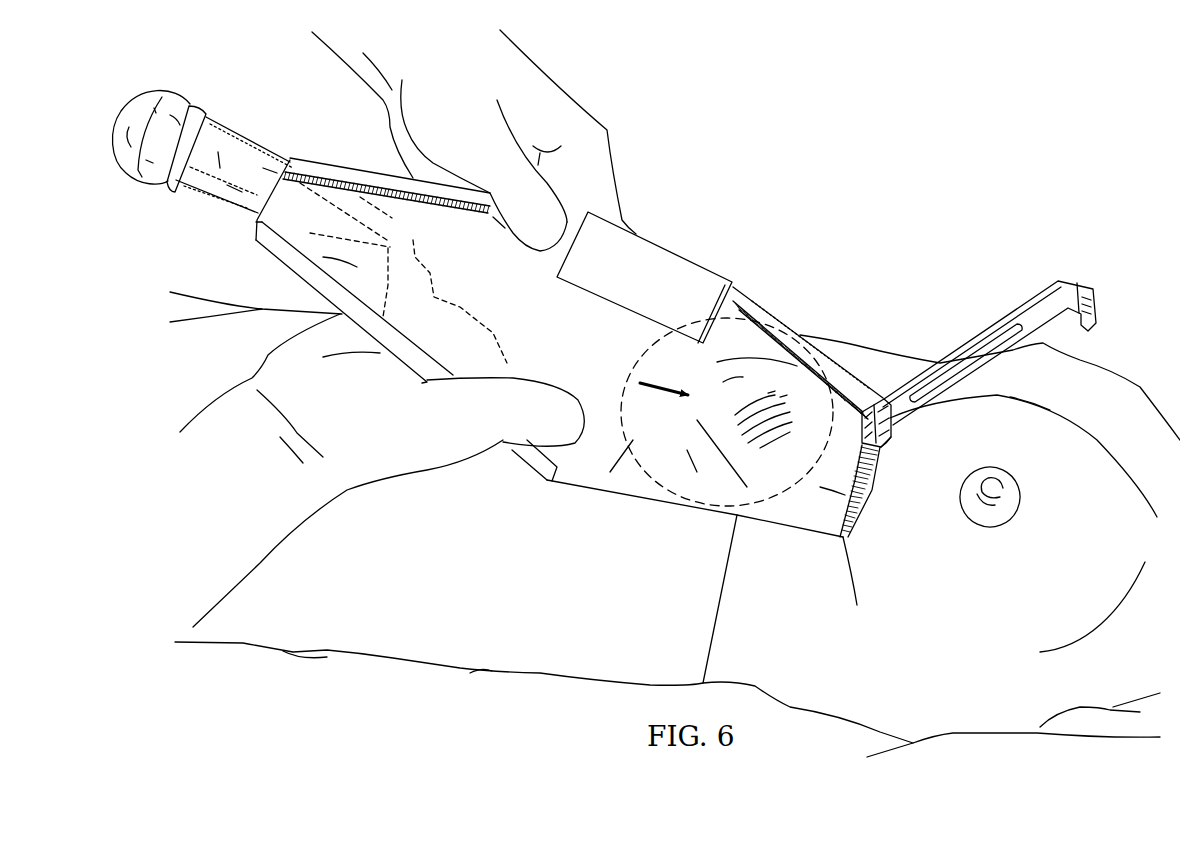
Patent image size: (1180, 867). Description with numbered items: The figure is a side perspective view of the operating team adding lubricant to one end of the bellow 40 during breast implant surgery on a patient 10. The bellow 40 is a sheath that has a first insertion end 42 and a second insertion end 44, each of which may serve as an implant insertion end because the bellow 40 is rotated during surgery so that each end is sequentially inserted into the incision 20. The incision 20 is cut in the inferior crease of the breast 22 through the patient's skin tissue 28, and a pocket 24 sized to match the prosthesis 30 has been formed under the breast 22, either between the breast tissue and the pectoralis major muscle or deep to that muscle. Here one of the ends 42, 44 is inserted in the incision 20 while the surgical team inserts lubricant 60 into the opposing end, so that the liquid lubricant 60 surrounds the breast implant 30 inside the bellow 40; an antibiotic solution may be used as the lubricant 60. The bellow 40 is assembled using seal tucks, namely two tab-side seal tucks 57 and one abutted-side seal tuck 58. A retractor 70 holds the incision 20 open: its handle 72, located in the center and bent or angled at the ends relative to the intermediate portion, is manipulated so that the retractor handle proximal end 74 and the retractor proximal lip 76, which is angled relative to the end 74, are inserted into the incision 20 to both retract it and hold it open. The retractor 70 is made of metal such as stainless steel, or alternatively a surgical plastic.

The patient 10 is at (1124, 362).
The incision 20 is at (876, 491).
The breast 22 is at (1092, 441).
The pocket 24 is at (858, 478).
The skin tissue 28 is at (1052, 418).
The prosthesis 30 is at (687, 315).
The bellow 40 is at (731, 266).
The first insertion end 42 is at (287, 158).
The second insertion end 44 is at (807, 547).
The tab-side seal tuck 57 is at (368, 174).
The abutted-side seal tuck 58 is at (283, 257).
The lubricant 60 is at (410, 240).
The retractor 70 is at (940, 351).
The retractor handle 72 is at (1010, 320).
The retractor handle proximal end 74 is at (879, 403).
The retractor proximal lip 76 is at (886, 443).